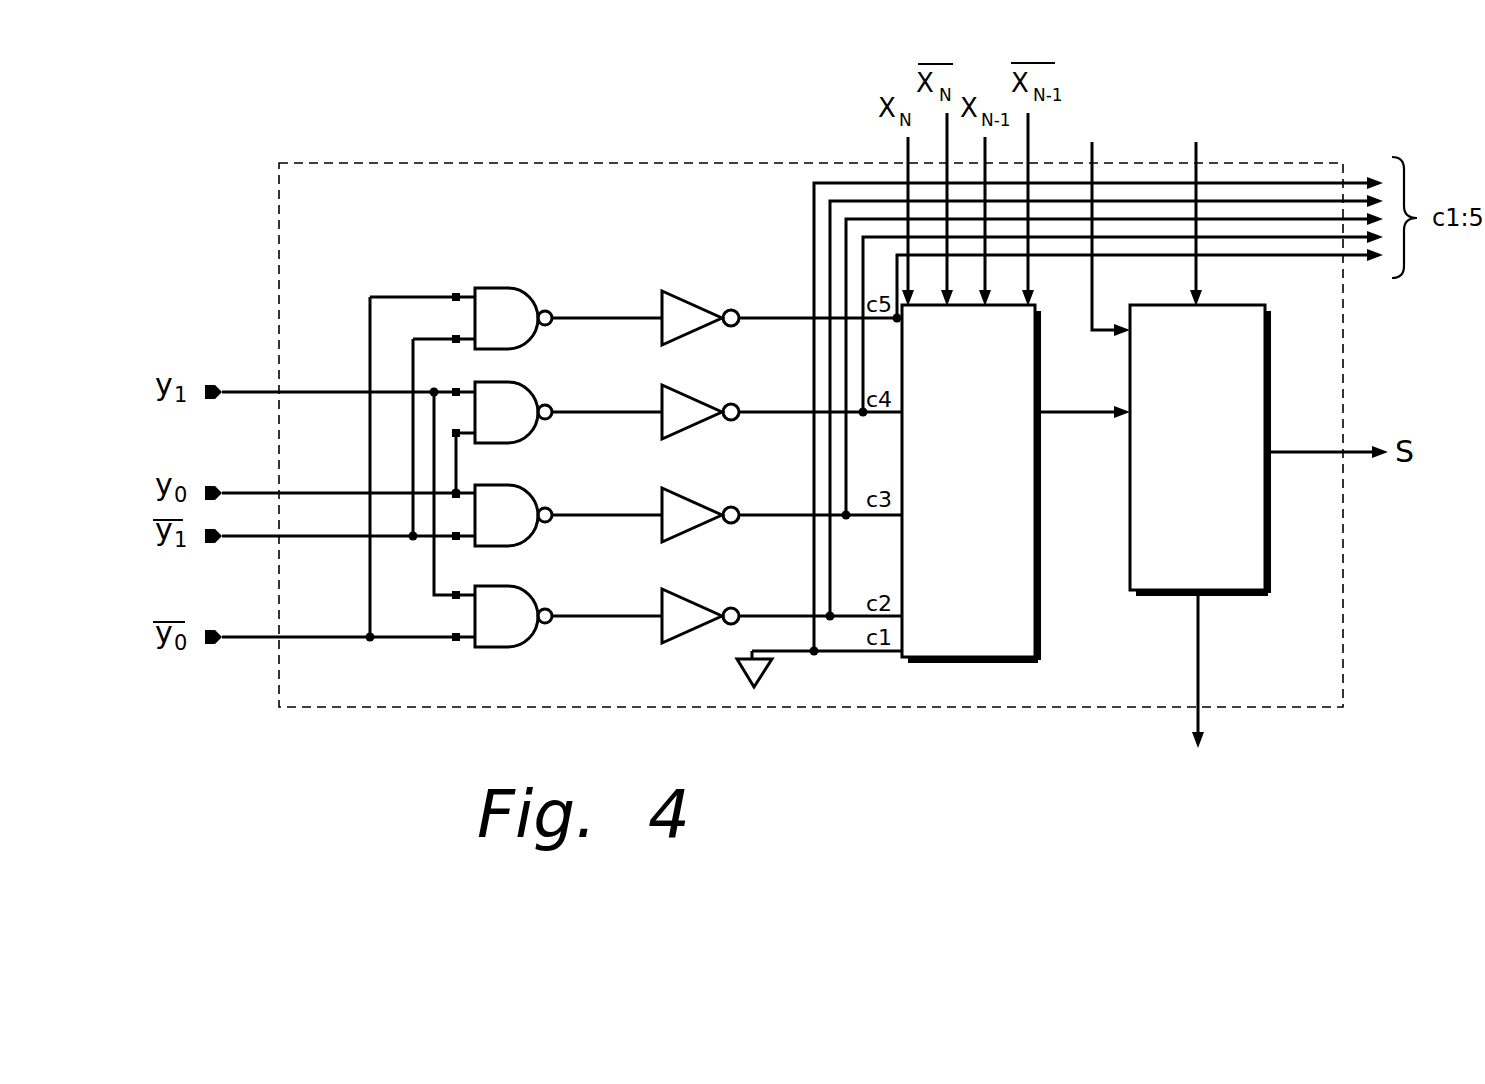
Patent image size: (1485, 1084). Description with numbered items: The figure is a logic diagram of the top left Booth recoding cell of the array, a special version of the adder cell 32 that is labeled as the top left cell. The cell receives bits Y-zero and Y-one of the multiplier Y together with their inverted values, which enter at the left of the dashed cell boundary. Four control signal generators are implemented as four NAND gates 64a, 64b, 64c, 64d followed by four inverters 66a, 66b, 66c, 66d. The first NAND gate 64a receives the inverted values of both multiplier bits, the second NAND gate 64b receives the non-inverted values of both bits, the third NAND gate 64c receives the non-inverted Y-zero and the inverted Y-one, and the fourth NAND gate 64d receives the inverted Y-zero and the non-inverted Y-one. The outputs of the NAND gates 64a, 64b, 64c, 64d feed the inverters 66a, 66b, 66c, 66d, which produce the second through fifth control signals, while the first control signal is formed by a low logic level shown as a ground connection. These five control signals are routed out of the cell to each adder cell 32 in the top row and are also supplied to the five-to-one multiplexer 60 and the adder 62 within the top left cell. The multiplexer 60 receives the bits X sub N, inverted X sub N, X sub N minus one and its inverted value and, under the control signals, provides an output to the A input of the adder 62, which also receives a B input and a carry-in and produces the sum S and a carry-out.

The adder cell 32 is at (1345, 624).
The 5-to-1 multiplexer 60 is at (1041, 597).
The adder 62 is at (1270, 536).
The first NAND gate 64a is at (547, 275).
The second NAND gate 64b is at (547, 369).
The third NAND gate 64c is at (547, 472).
The fourth NAND gate 64d is at (547, 573).
The inverter 66a is at (690, 293).
The inverter 66b is at (690, 387).
The inverter 66c is at (690, 490).
The inverter 66d is at (690, 591).